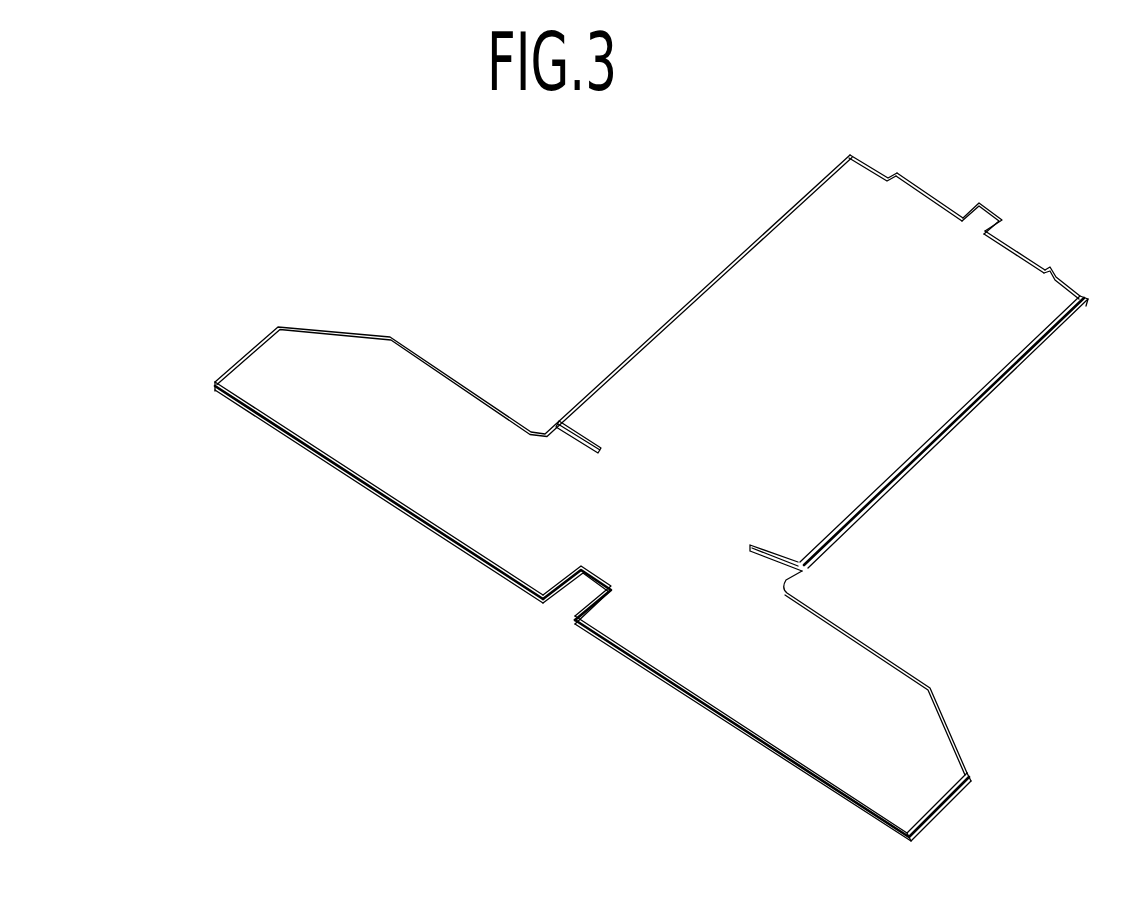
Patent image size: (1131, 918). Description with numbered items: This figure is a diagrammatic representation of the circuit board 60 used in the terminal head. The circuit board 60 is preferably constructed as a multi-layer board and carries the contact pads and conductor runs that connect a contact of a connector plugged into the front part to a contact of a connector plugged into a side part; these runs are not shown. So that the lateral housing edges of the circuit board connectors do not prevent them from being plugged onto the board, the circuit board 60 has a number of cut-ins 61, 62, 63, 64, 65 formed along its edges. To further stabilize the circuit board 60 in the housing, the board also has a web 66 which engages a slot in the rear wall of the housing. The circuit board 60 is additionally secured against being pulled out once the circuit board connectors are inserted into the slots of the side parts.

The circuit board 60 is at (727, 226).
The cut-in 61 is at (585, 578).
The cut-in 62 is at (804, 565).
The cut-in 63 is at (600, 440).
The cut-in 64 is at (1064, 287).
The cut-in 65 is at (876, 166).
The web 66 is at (995, 211).